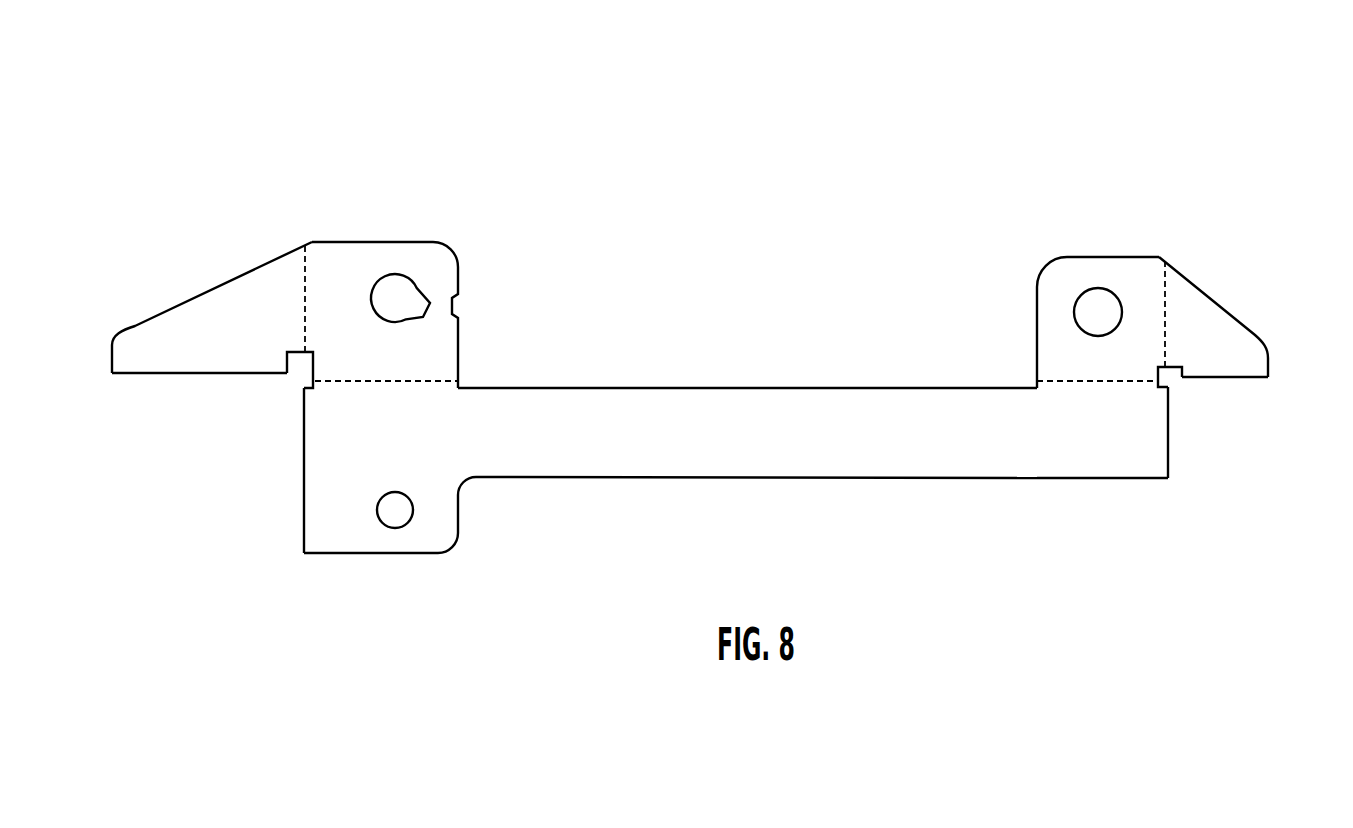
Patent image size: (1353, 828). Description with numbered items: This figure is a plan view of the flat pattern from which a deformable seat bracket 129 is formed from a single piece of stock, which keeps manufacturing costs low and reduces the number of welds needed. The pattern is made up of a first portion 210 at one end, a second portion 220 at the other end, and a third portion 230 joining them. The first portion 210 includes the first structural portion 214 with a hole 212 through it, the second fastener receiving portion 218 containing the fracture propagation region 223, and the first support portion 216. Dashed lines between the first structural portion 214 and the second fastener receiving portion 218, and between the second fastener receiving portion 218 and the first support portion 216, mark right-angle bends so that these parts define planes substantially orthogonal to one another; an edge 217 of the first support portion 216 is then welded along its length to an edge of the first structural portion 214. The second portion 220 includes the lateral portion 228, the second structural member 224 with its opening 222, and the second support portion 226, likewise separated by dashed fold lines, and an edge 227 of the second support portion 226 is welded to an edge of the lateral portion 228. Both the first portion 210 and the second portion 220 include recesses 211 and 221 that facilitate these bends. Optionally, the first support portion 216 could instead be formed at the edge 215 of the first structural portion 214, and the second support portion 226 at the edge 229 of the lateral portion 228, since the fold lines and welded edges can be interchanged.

The seat bracket 129 is at (190, 163).
The first portion 210 is at (225, 485).
The recess 211 is at (307, 371).
The hole 212 is at (397, 518).
The first structural portion 214 is at (330, 512).
The edge 215 is at (304, 487).
The first support portion 216 is at (195, 328).
The edge 217 is at (165, 374).
The second fastener receiving portion 218 is at (345, 266).
The second portion 220 is at (1221, 439).
The recess 221 is at (1168, 382).
The mounting hole 222 is at (1098, 303).
The fracture propagation region 223 is at (427, 300).
The second structural member 224 is at (1048, 278).
The second support portion 226 is at (1207, 335).
The edge 227 is at (1232, 384).
The lateral portion 228 is at (1098, 418).
The edge 229 is at (1163, 447).
The third portion 230 is at (715, 500).